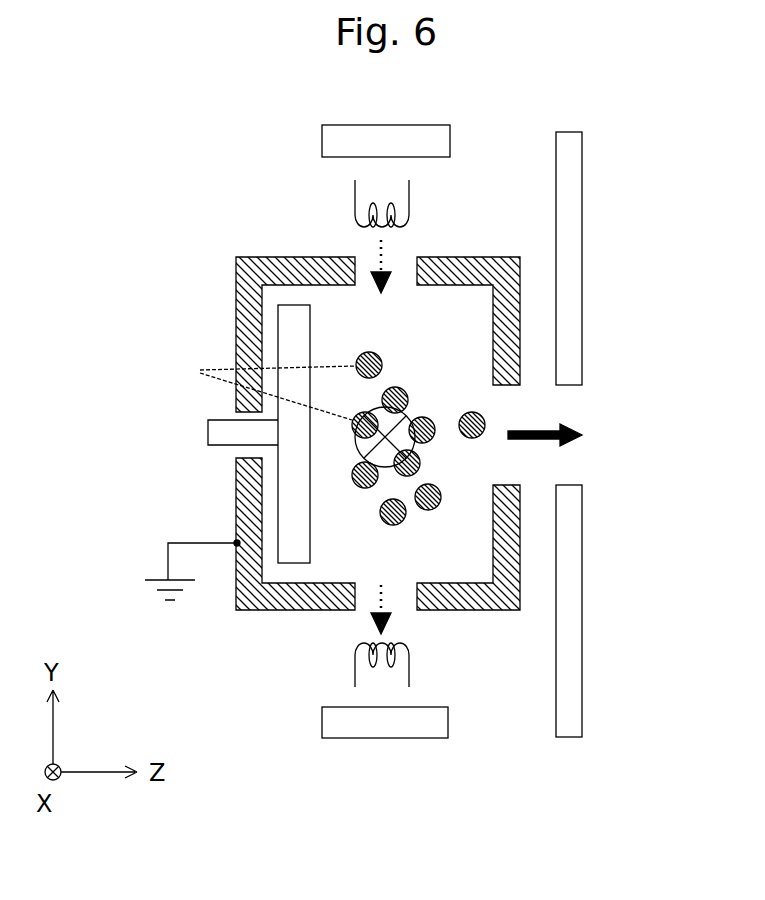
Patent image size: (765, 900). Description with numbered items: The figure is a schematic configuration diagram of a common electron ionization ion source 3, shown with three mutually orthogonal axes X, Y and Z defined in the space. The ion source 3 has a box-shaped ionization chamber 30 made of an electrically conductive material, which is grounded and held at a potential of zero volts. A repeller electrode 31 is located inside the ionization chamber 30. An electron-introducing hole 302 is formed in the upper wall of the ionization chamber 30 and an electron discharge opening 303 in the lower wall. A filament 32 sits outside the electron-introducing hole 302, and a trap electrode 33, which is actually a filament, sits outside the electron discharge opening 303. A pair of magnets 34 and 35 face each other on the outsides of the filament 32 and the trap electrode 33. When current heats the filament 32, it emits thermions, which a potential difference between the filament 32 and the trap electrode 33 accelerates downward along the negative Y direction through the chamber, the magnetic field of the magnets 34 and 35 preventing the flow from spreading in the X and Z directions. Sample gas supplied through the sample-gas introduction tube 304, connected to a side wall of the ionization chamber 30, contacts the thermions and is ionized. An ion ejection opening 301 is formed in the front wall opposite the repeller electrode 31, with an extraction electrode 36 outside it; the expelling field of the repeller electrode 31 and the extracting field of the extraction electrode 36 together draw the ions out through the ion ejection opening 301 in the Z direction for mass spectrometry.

The ion source 3 is at (213, 209).
The ionization chamber 30 is at (520, 292).
The ion ejection opening 301 is at (513, 403).
The electron-introducing hole 302 is at (403, 268).
The electron discharge opening 303 is at (410, 600).
The sample-gas introduction tube 304 is at (355, 450).
The repeller electrode 31 is at (278, 330).
The filament 32 is at (355, 212).
The trap electrode 33 is at (355, 662).
The magnet 34 is at (322, 140).
The magnet 35 is at (322, 730).
The extraction electrode 36 is at (584, 180).